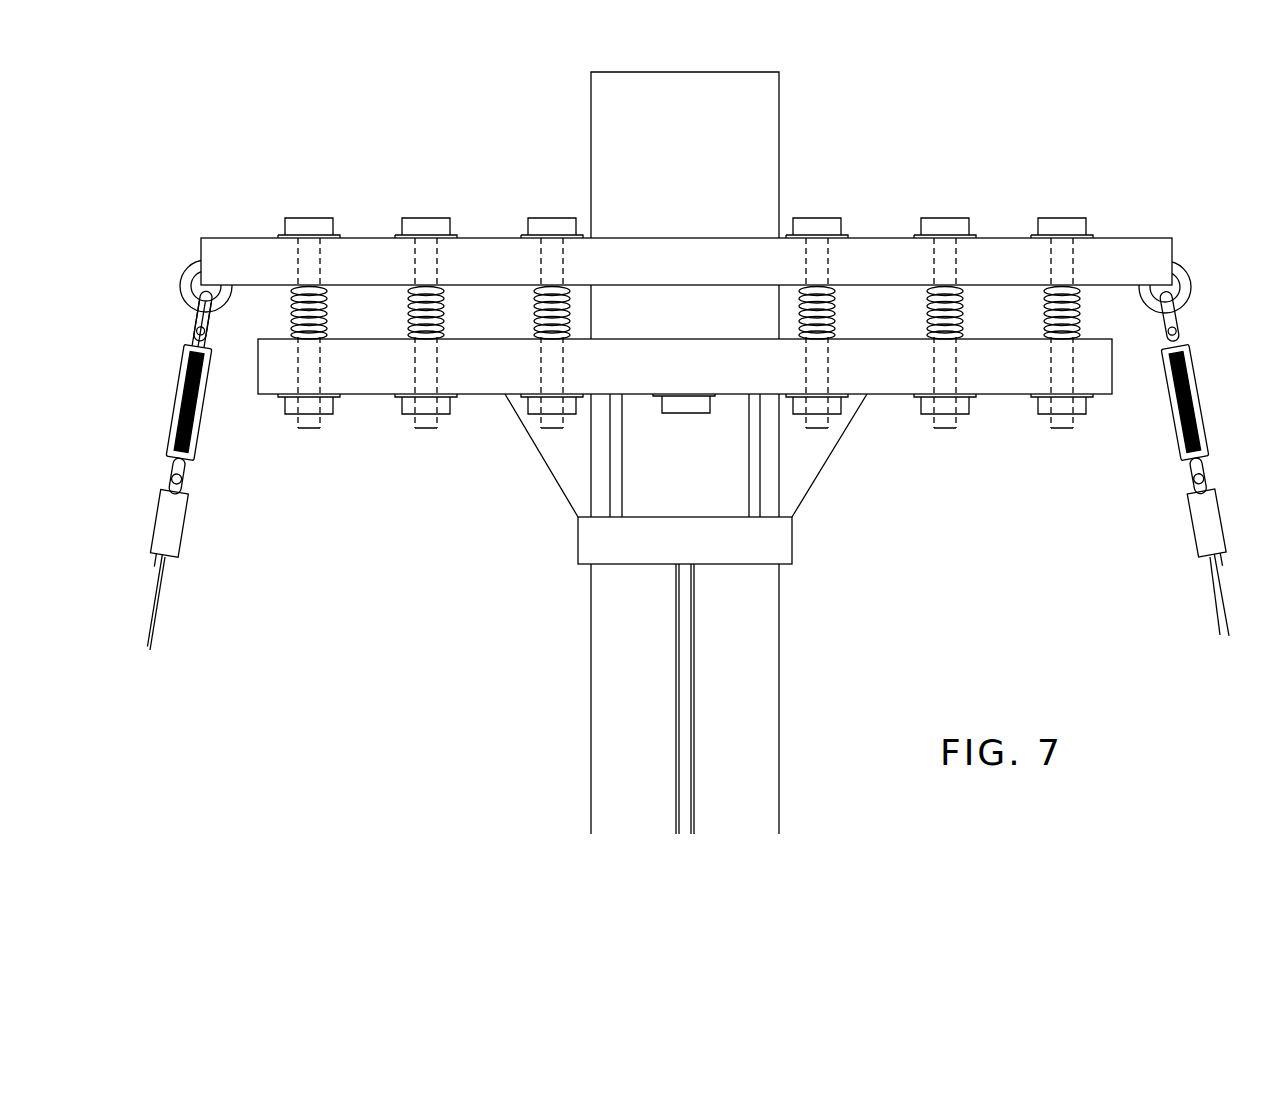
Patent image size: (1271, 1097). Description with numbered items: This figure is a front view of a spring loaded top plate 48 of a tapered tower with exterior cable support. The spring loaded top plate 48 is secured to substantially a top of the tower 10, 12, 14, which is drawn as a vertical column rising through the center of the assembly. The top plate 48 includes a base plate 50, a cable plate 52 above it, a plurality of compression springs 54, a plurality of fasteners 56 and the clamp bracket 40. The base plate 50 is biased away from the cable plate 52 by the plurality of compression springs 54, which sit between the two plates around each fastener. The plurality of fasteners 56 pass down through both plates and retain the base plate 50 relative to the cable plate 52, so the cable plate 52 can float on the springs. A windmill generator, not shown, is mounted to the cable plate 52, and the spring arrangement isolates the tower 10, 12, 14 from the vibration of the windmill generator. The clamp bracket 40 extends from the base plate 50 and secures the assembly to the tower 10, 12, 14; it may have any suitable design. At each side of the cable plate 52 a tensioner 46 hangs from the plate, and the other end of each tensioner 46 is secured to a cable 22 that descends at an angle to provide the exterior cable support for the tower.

The tower structure 10 is at (813, 453).
The tower structure 12 is at (813, 453).
The tower structure 14 is at (812, 627).
The cable 22 is at (1220, 605).
The clamp bracket 40 is at (552, 475).
The tensioner 46 is at (1177, 410).
The spring loaded top plate 48 is at (927, 176).
The base plate 50 is at (883, 394).
The cable plate 52 is at (865, 237).
The compression spring 54 is at (1047, 313).
The fastener 56 is at (1057, 218).